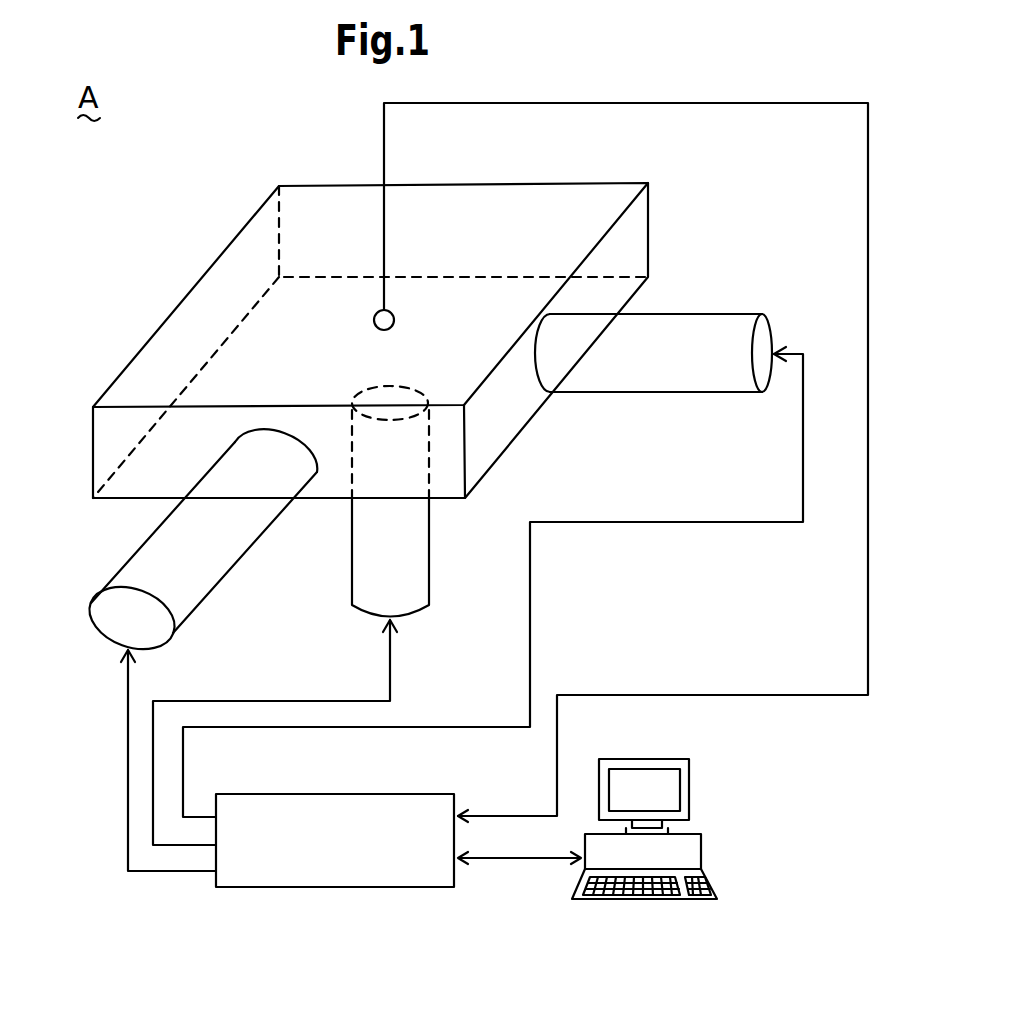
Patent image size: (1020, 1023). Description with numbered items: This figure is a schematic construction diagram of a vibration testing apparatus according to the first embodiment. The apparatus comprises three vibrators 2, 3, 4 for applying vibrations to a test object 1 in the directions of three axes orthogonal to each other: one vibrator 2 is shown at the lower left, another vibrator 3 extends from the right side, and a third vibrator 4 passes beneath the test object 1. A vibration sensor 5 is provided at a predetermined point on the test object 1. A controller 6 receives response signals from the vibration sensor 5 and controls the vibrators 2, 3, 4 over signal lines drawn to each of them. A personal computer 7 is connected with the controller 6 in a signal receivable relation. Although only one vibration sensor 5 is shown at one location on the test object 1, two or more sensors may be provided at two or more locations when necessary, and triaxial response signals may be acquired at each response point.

The test object 1 is at (578, 187).
The vibrator 2 is at (222, 570).
The vibrator 3 is at (672, 325).
The vibrator 4 is at (422, 570).
The vibration sensor 5 is at (395, 318).
The controller 6 is at (343, 887).
The personal computer 7 is at (702, 850).